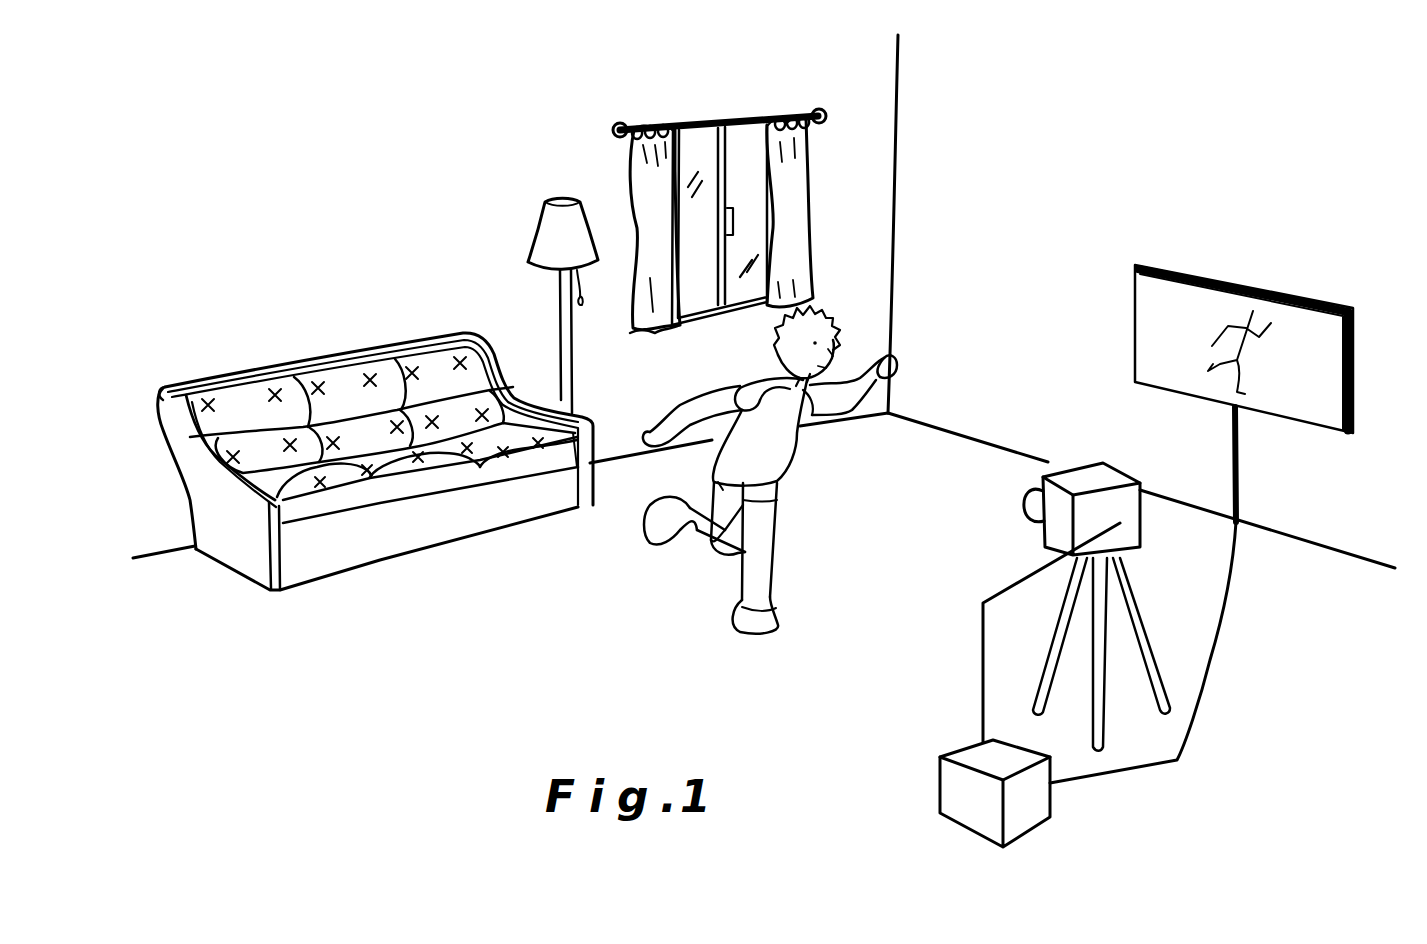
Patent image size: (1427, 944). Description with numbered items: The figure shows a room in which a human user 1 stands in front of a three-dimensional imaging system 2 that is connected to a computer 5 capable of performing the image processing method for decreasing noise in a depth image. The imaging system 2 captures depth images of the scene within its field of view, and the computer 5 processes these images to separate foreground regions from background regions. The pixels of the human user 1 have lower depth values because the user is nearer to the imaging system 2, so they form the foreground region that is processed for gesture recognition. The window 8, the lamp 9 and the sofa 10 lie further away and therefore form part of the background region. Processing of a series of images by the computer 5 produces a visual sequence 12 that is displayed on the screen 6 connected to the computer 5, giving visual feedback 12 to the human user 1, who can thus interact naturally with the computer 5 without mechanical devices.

The human user 1 is at (810, 460).
The 3D imaging system 2 is at (1077, 482).
The computer 5 is at (953, 802).
The screen 6 is at (1197, 273).
The window 8 is at (697, 127).
The lamp 9 is at (558, 240).
The sofa 10 is at (327, 385).
The visual feedback 12 is at (1263, 360).